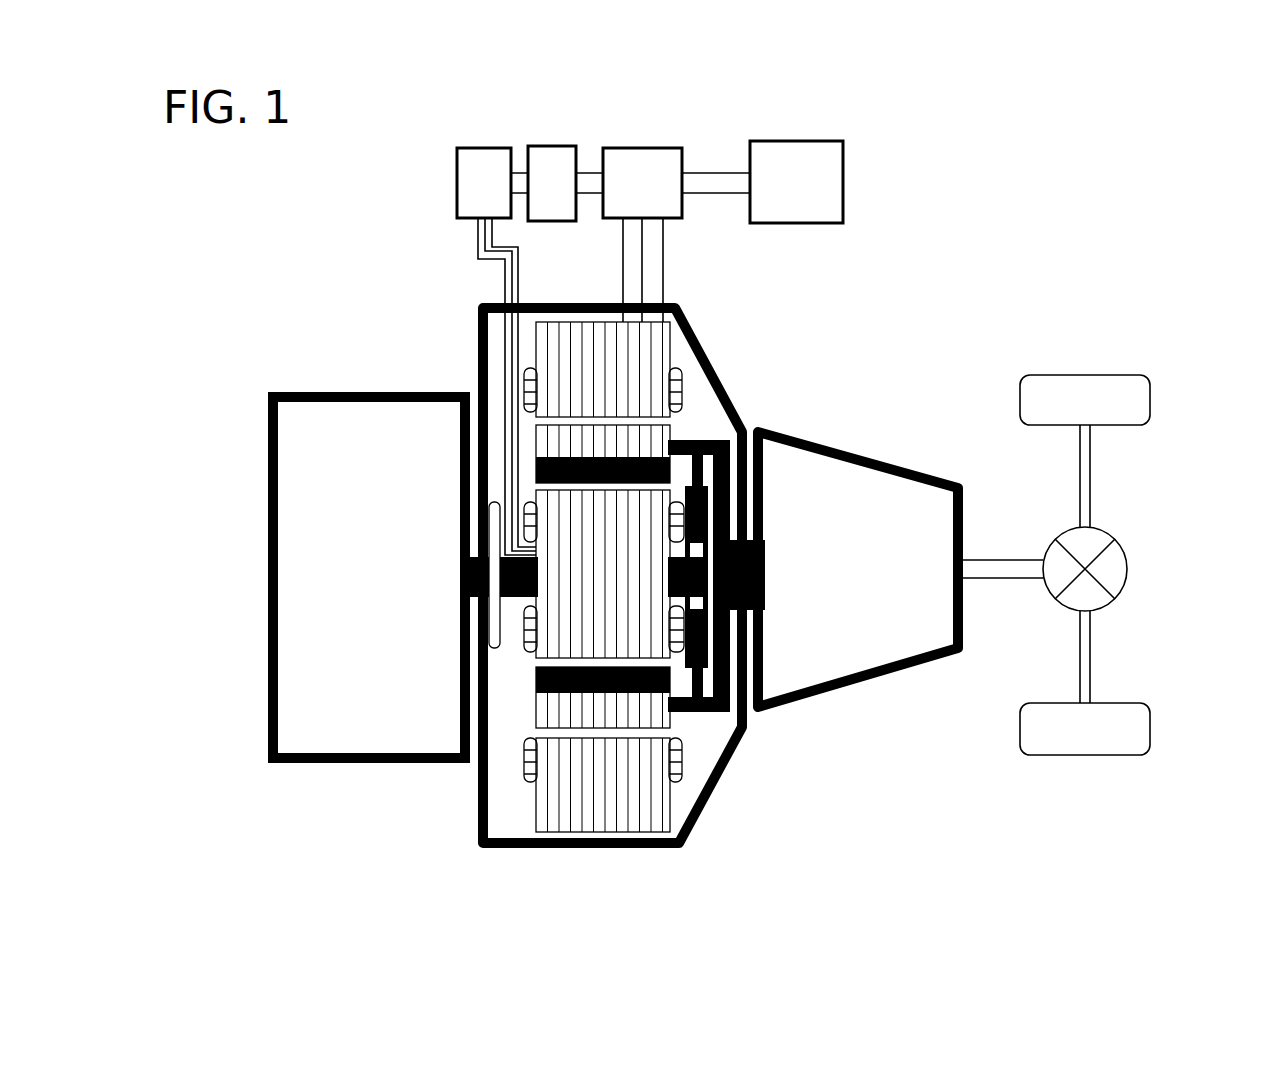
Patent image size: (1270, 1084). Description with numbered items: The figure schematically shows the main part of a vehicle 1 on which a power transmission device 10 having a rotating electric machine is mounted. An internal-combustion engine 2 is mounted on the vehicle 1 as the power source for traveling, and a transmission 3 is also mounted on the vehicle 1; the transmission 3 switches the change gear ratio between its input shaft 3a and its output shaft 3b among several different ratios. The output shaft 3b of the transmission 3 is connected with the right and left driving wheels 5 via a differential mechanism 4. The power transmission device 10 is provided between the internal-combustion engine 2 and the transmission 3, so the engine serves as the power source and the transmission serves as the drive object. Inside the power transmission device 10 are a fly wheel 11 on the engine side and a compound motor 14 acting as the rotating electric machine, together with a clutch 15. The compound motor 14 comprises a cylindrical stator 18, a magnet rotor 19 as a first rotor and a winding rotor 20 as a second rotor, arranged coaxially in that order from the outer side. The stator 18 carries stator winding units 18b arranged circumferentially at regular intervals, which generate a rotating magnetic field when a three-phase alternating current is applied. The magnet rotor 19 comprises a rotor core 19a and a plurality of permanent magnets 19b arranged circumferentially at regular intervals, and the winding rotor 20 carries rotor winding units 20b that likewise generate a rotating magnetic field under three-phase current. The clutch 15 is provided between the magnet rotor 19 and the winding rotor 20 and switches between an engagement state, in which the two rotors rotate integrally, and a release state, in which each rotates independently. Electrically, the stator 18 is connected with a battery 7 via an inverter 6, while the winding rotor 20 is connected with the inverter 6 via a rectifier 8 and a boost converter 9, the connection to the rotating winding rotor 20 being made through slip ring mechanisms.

The vehicle 1 is at (1046, 250).
The internal-combustion engine 2 is at (268, 666).
The transmission 3 is at (858, 609).
The input shaft 3a is at (764, 632).
The output shaft 3b is at (998, 558).
The differential mechanism 4 is at (1130, 570).
The driving wheels 5 is at (1150, 398).
The inverter 6 is at (645, 148).
The battery 7 is at (795, 141).
The rectifier 8 is at (481, 148).
The boost converter 9 is at (549, 146).
The power transmission device 10 is at (448, 308).
The fly wheel 11 is at (523, 640).
The compound motor 14 is at (607, 848).
The clutch 15 is at (711, 730).
The stator 18 is at (558, 842).
The stator winding units 18b is at (688, 378).
The magnet rotor 19 is at (587, 575).
The rotor core 19a is at (495, 650).
The permanent magnets 19b is at (575, 450).
The winding rotor 20 is at (760, 443).
The rotor winding units 20b is at (708, 515).